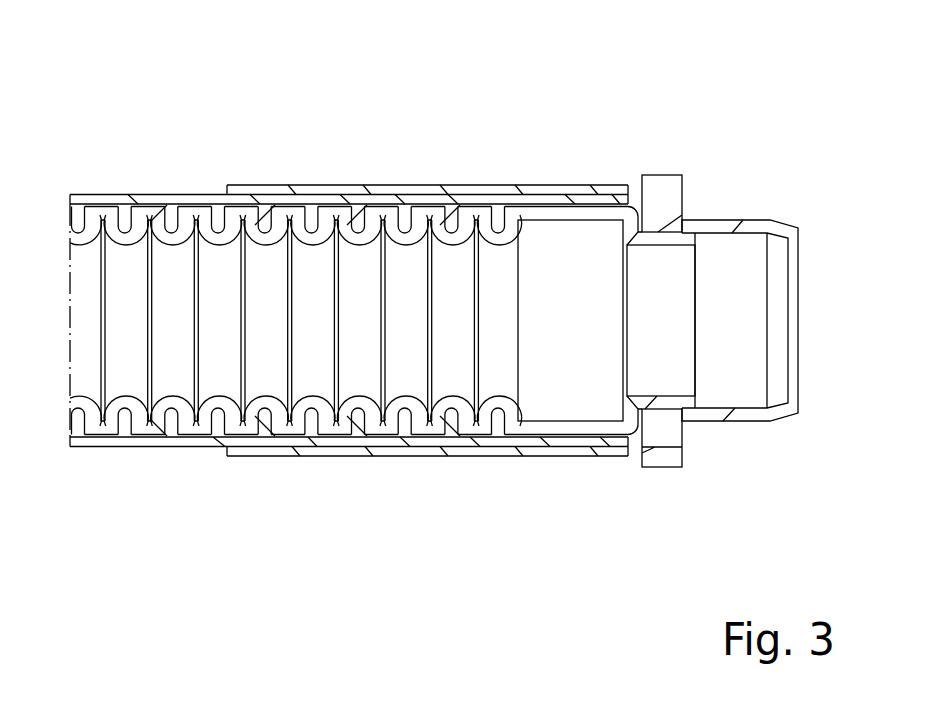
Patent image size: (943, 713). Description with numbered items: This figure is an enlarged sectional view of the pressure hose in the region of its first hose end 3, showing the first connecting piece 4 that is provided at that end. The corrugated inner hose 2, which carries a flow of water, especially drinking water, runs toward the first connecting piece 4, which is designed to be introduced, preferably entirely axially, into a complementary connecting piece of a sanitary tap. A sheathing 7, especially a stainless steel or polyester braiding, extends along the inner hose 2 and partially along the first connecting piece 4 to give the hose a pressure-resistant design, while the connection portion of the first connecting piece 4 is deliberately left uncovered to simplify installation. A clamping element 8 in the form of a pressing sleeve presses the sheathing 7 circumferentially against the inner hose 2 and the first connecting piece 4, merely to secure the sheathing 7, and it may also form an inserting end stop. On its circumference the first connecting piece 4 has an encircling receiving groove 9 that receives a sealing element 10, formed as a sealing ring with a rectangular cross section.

The corrugated inner hose 2 is at (143, 208).
The first hose end 3 is at (798, 118).
The first connecting piece 4 is at (722, 183).
The sheathing 7 is at (220, 198).
The clamping element 8 is at (387, 190).
The receiving groove 9 is at (682, 222).
The sealing element 10 is at (653, 187).